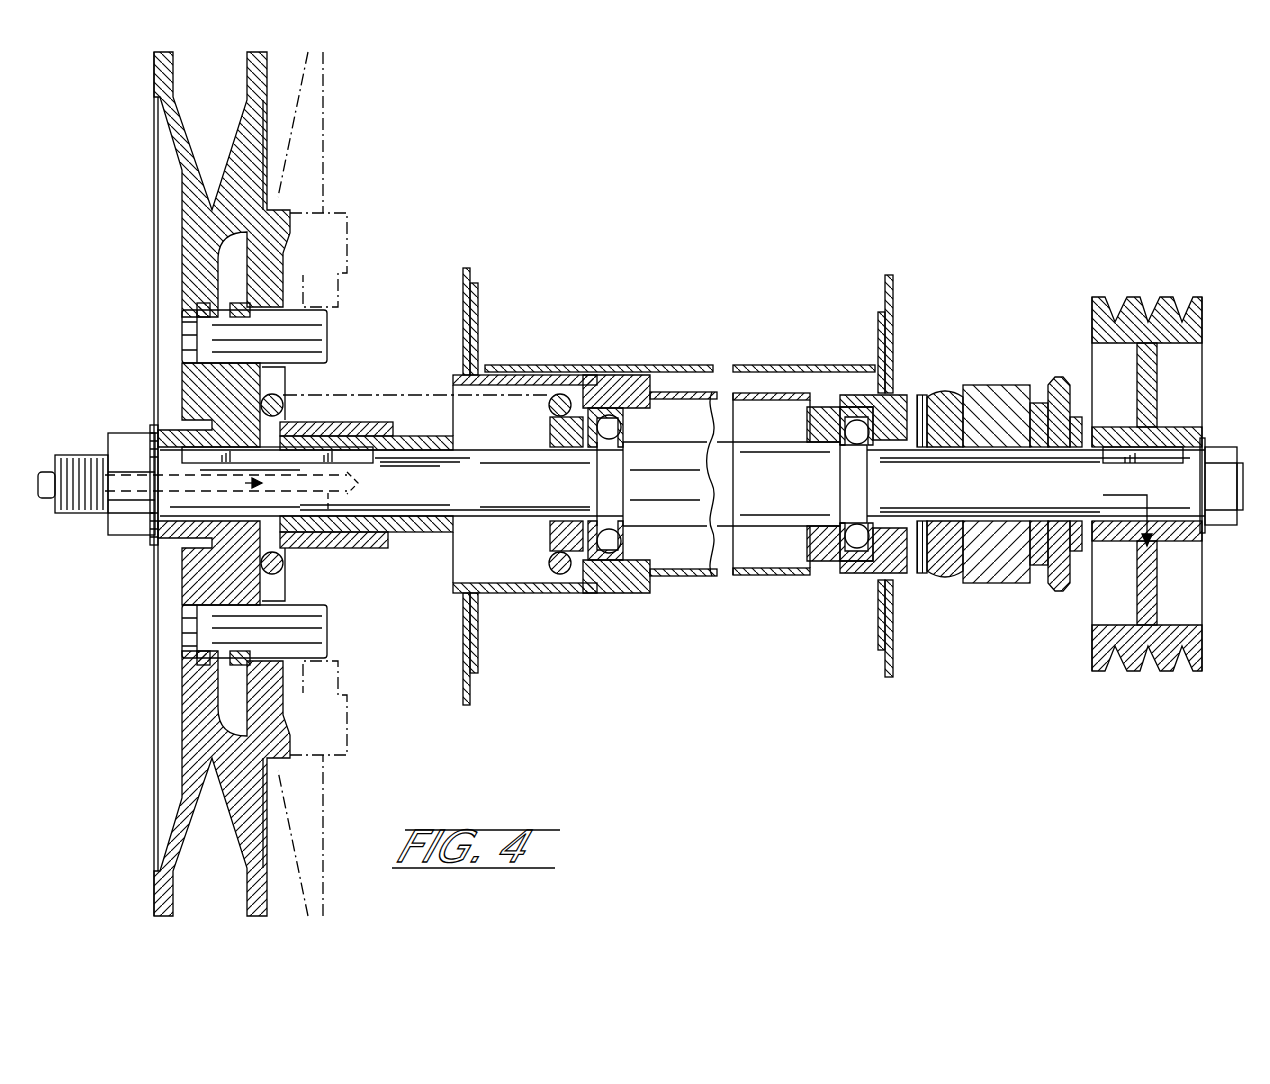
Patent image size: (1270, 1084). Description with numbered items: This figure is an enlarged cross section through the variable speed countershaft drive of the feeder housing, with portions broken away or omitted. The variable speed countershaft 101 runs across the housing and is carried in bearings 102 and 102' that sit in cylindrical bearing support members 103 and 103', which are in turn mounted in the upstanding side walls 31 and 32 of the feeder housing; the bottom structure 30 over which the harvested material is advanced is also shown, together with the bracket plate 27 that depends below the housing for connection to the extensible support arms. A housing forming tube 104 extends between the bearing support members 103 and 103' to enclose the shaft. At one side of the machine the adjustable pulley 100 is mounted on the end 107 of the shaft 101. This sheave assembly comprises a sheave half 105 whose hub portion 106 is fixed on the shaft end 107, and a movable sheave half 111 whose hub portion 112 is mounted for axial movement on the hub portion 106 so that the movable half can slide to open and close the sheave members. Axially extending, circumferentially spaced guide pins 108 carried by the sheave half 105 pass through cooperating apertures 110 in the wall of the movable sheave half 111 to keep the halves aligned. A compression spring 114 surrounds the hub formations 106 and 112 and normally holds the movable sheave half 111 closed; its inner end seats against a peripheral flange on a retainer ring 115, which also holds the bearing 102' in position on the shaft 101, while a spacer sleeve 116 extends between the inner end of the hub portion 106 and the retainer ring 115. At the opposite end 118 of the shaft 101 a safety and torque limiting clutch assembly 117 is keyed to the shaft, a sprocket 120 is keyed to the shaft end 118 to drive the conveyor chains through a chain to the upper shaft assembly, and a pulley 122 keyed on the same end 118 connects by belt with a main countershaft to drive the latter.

The adjustable pulley 100 is at (283, 145).
The sheave half 105 is at (185, 218).
The hub portion 106 is at (207, 428).
The end of the shaft 107 is at (190, 508).
The guide pins 108 is at (317, 347).
The apertures 110 is at (280, 337).
The sheave half 111 is at (283, 663).
The hub portion 112 is at (428, 525).
The compression spring 114 is at (338, 408).
The retainer ring 115 is at (558, 428).
The spacer sleeve 116 is at (500, 443).
The side wall 31 is at (478, 333).
The bracket plate 27 is at (463, 652).
The side wall 32 is at (882, 343).
The bottom structure 30 is at (788, 367).
The cylindrical bearing support member 103' is at (551, 505).
The bearing 102' is at (619, 516).
The housing forming tube 104 is at (692, 388).
The variable speed countershaft 101 is at (787, 510).
The bearing 102 is at (854, 515).
The cylindrical bearing support member 103 is at (847, 518).
The safety and torque limiting clutch assembly 117 is at (982, 555).
The end of the shaft 118 is at (1033, 497).
The sprocket 120 is at (1060, 590).
The pulley 122 is at (1193, 327).